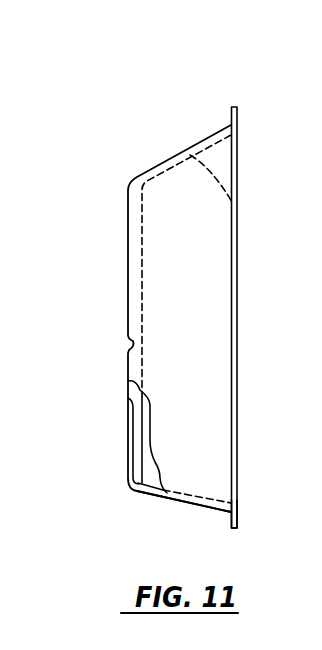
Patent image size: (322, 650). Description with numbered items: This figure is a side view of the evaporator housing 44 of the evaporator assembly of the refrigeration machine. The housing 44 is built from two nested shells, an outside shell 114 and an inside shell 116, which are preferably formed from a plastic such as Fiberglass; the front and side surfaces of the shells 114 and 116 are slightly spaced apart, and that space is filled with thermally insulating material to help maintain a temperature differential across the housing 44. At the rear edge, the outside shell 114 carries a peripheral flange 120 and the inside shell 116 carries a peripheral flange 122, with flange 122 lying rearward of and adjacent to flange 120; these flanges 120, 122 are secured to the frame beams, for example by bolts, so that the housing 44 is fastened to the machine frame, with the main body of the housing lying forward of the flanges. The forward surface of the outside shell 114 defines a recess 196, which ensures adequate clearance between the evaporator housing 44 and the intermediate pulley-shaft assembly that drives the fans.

The evaporator housing 44 is at (182, 102).
The outside shell 114 is at (155, 166).
The inside shell 116 is at (235, 202).
The peripheral flange 120 is at (230, 513).
The peripheral flange 122 is at (234, 510).
The recess 196 is at (133, 438).